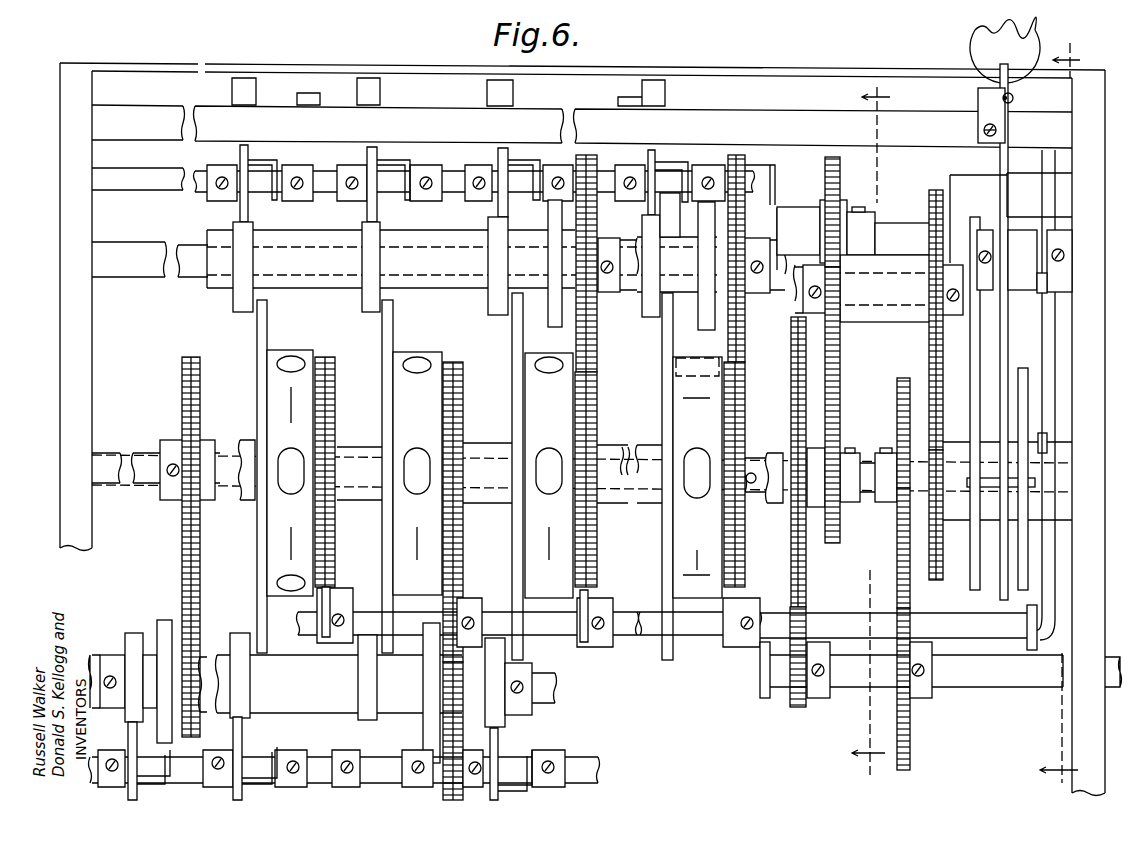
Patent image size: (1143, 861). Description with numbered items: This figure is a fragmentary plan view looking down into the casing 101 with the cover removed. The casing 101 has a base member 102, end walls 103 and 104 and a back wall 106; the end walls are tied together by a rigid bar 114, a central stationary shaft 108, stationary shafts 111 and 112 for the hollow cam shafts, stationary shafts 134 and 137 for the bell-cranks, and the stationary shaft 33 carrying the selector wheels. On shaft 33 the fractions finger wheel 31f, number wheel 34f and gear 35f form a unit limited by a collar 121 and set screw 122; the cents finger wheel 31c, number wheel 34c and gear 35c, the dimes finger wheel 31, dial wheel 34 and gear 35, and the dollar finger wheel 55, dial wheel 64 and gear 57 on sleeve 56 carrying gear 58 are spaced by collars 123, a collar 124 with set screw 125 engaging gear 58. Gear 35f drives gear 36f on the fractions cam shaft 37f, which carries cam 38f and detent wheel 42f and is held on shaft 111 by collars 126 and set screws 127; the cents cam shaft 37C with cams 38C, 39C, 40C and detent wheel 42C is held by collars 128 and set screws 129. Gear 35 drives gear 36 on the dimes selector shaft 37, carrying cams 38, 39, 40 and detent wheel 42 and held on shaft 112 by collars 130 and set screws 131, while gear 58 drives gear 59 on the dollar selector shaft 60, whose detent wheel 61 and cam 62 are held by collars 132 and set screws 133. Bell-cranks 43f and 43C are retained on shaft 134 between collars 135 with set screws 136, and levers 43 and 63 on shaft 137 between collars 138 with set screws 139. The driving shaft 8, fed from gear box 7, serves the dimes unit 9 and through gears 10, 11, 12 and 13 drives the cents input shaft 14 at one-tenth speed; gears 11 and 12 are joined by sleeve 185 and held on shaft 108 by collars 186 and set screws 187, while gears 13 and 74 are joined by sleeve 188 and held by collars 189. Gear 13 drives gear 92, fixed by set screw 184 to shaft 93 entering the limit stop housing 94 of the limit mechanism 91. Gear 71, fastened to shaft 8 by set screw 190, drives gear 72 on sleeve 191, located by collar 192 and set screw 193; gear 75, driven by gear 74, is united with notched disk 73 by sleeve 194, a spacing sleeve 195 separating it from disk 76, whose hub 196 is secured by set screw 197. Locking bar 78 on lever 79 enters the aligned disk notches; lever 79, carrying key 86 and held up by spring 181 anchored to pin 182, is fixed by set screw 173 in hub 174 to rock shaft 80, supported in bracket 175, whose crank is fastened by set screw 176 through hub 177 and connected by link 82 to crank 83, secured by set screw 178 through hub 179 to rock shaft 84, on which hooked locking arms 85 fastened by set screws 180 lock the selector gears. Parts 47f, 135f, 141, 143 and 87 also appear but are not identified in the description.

The casing 101 is at (54, 267).
The end wall 104 is at (1100, 348).
The back wall 106 is at (362, 63).
The rigid bar 114 is at (540, 118).
The stationary shaft 134 is at (158, 170).
The collar 135 is at (221, 166).
The set screw 136 is at (222, 189).
The hook link 47f is at (258, 151).
The bell-crank 43C is at (506, 149).
The bell-crank 43f is at (675, 154).
The link block 135f is at (710, 163).
The detent wheel 42f is at (752, 163).
The stationary shaft 111 is at (135, 255).
The cam shaft 37C is at (305, 289).
The cam 40C is at (254, 260).
The cam 39C is at (362, 258).
The cam 38C is at (487, 262).
The detent wheel 42C is at (547, 270).
The collar 128 is at (603, 238).
The set screw 129 is at (608, 274).
The selector cam 38f is at (652, 262).
The cam shaft 37f is at (706, 320).
The collar 126 is at (755, 240).
The set screw 127 is at (758, 273).
The stationary shaft 112 is at (776, 262).
The end wall 103 is at (800, 206).
The gear 92 is at (838, 202).
The set screw 184 is at (860, 208).
The shaft 93 is at (900, 230).
The sleeve 188 is at (880, 312).
The collar 189 is at (822, 300).
The stationary shaft 33 is at (136, 452).
The spacer collar 123 is at (345, 446).
The collar 124 is at (172, 441).
The set screw 125 is at (173, 476).
The hollow shaft 56 is at (244, 441).
The finger wheel 55 is at (256, 338).
The finger wheel 31 is at (381, 336).
The finger wheel 31c is at (520, 335).
The finger wheel 31f is at (662, 407).
The collar 186 is at (775, 455).
The central stationary shaft 108 is at (866, 495).
The set screw 187 is at (850, 448).
The set screw 193 is at (885, 448).
The collar 192 is at (884, 495).
The hub 196 is at (1070, 446).
The set screw 197 is at (1060, 436).
The locking bar 78 is at (982, 487).
The notched disk 73 is at (970, 560).
The notched disk 76 is at (1018, 580).
The connecting sleeve 194 is at (958, 510).
The spacing sleeve 195 is at (1005, 515).
The gear 58 is at (182, 540).
The gear 59 is at (206, 608).
The gear 57 is at (327, 524).
The gear 35 is at (455, 542).
The gear 36 is at (458, 717).
The gear 74 is at (577, 340).
The gear 35c is at (590, 538).
The gear 36f is at (740, 340).
The gear 35f is at (740, 412).
The gear 13 is at (828, 178).
The gear 12 is at (830, 540).
The gear 11 is at (792, 540).
The gear 10 is at (792, 707).
The sleeve 191 is at (915, 448).
The gear 72 is at (896, 533).
The gear 71 is at (911, 732).
The gear 75 is at (938, 432).
The dial wheel 64 is at (278, 506).
The dial wheel 34 is at (382, 538).
The number wheel 34c is at (535, 520).
The number wheel 34f is at (675, 568).
The collar 121 is at (745, 452).
The set screw 122 is at (745, 483).
The sleeve 185 is at (812, 510).
The locking arm 85 is at (318, 608).
The set screw 180 is at (340, 614).
The cam 39 is at (360, 675).
The cam 40 is at (240, 680).
The set screw 133 is at (110, 655).
The collar 132 is at (114, 655).
The selector cam 62 is at (133, 640).
The selector shaft 60 is at (150, 655).
The detent wheel 61 is at (165, 623).
The selector shaft 37 is at (423, 660).
The detent wheel 42 is at (423, 678).
The cam 38 is at (494, 692).
The collar 130 is at (518, 705).
The set screw 131 is at (522, 680).
The rock shaft 84 is at (980, 640).
The shaft 8 is at (766, 690).
The set screw 190 is at (925, 671).
The crank 83 is at (1027, 628).
The link 82 is at (1041, 348).
The hub 179 is at (1056, 615).
The set screw 178 is at (1060, 635).
The collar 138 is at (218, 785).
The set screw 139 is at (225, 763).
The stationary shaft 137 is at (254, 760).
The three-armed lever 43 is at (272, 795).
The stem 141 is at (128, 740).
The arm 143 is at (168, 752).
The three-armed lever 63 is at (119, 793).
The key 86 is at (973, 33).
The lever 79 is at (1000, 325).
The stationary pin 182 is at (978, 98).
The tension spring 181 is at (1014, 98).
The limit stop housing 94 is at (1048, 178).
The hub 174 is at (983, 215).
The limit stop mechanism 91 is at (954, 157).
The bracket 175 is at (968, 230).
The set screw 173 is at (990, 255).
The rock shaft 80 is at (1022, 250).
The set screw 176 is at (1062, 250).
The block 87 is at (1036, 281).
The hub 177 is at (1060, 290).
The input shaft 14 is at (975, 300).
The base member 102 is at (92, 494).
The dimes unit 9 is at (871, 428).
The multiplying gear box 7 is at (1061, 415).